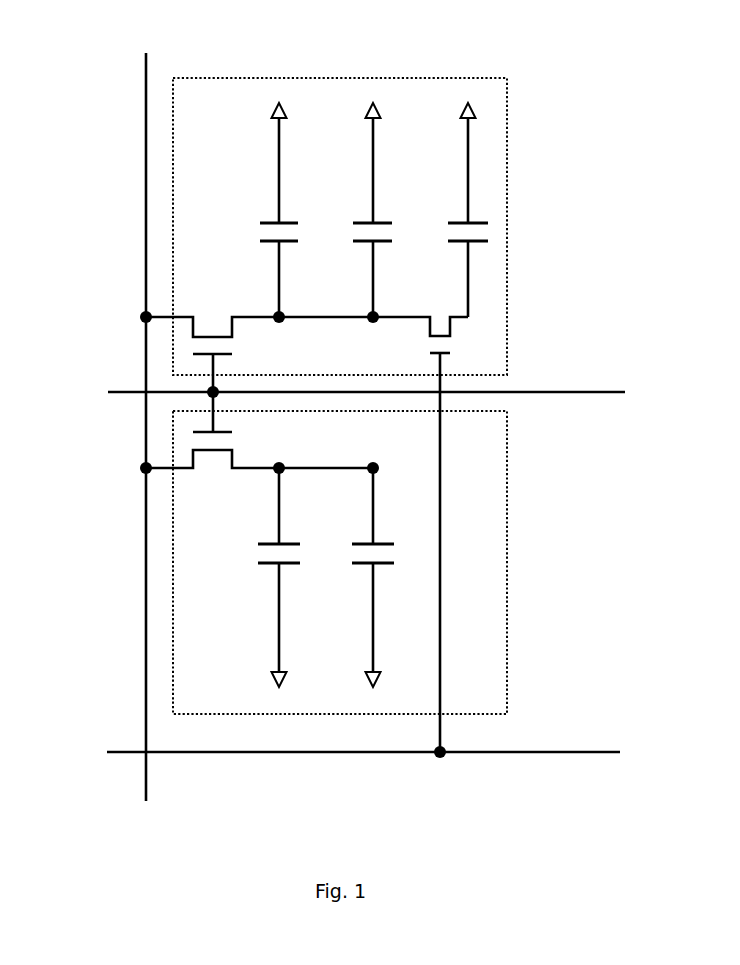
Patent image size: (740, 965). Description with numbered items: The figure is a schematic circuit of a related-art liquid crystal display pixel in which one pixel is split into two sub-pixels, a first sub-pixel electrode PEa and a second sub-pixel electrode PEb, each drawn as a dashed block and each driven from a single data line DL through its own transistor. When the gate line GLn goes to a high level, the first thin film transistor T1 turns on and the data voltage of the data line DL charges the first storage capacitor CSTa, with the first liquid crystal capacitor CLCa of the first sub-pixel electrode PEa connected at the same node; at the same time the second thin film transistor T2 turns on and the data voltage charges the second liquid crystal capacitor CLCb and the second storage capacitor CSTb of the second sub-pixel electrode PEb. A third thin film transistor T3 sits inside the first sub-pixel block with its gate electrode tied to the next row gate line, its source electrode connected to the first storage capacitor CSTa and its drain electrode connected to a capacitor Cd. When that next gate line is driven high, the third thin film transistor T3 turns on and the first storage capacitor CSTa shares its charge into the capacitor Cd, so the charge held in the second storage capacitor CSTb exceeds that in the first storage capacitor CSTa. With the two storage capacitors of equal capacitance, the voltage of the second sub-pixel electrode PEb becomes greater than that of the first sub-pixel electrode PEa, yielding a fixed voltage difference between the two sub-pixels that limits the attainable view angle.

The data line DL is at (147, 416).
The gate line GLn is at (337, 393).
The first sub-pixel electrode PEa is at (508, 100).
The second sub-pixel electrode PEb is at (507, 630).
The first thin film transistor T1 is at (215, 351).
The second thin film transistor T2 is at (215, 433).
The third thin film transistor T3 is at (420, 534).
The first liquid crystal capacitor CLCa is at (257, 210).
The first storage capacitor CSTa is at (335, 213).
The capacitor Cd is at (462, 210).
The second liquid crystal capacitor CLCb is at (258, 577).
The second storage capacitor CSTb is at (353, 574).